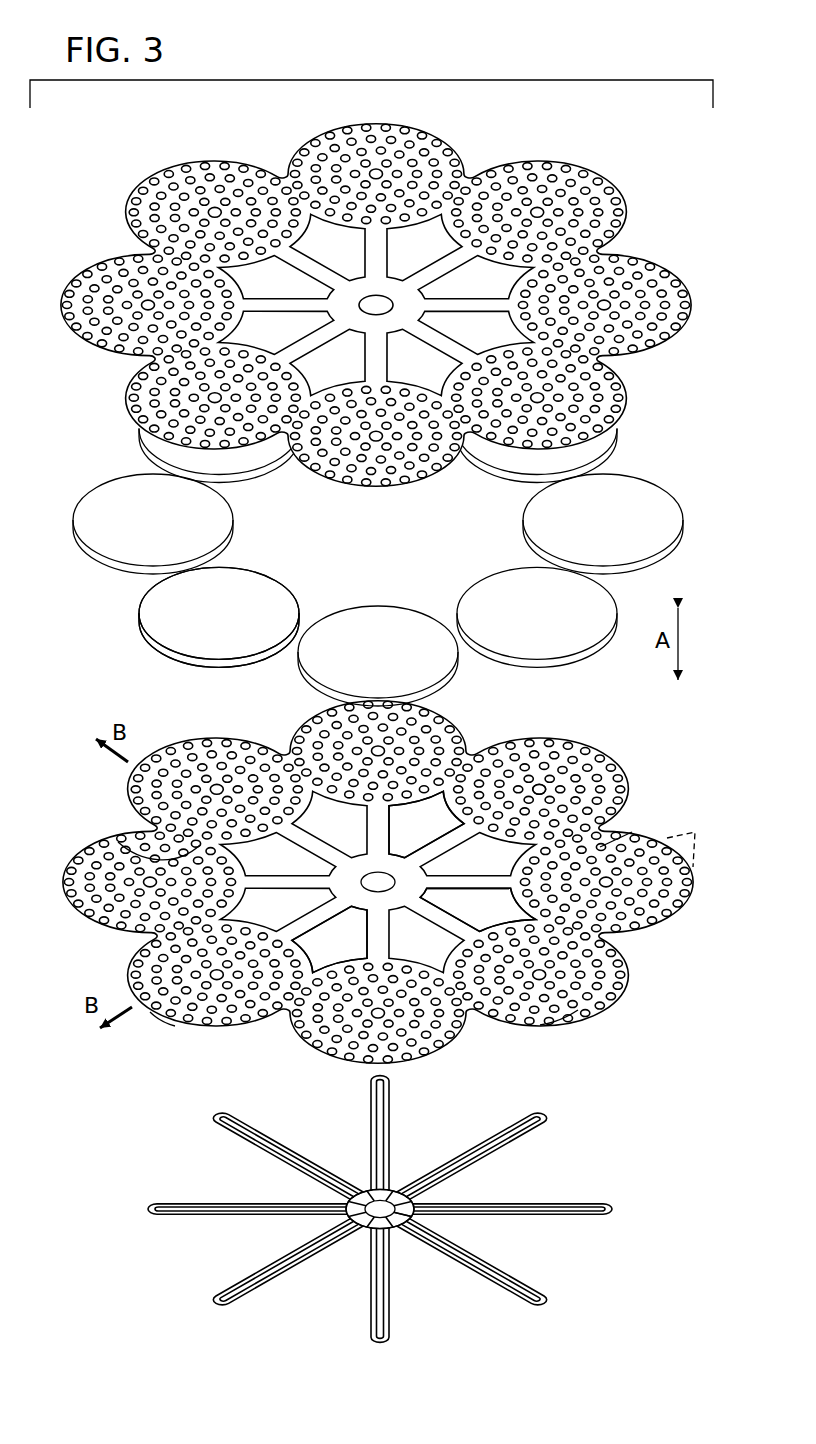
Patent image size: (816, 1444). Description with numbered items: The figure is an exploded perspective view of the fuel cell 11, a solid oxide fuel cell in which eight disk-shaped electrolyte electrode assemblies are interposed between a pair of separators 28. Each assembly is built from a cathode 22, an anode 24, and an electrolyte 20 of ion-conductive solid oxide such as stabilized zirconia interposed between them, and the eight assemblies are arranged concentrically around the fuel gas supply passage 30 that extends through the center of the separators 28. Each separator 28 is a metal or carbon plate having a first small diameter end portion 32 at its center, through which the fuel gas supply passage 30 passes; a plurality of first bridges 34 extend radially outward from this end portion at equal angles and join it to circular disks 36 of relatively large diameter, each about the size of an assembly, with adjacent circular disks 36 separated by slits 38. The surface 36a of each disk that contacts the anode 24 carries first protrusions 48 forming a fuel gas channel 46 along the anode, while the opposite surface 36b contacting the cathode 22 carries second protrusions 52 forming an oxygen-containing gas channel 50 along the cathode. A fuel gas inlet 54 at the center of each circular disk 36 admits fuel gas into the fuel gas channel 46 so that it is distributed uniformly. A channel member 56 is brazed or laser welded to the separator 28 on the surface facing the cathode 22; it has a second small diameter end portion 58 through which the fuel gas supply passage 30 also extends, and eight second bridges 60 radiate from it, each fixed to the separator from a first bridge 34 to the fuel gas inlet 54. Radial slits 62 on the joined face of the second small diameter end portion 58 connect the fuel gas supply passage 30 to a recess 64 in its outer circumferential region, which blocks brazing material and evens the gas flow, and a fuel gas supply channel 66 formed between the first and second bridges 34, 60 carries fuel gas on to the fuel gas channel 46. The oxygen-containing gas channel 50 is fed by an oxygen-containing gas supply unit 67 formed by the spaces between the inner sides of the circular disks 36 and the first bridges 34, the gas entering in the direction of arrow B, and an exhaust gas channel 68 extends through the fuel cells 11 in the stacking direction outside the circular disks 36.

The fuel cell 11 is at (578, 133).
The electrolyte 20 is at (143, 628).
The cathode 22 is at (170, 613).
The anode 24 is at (172, 634).
The separator 28 is at (647, 162).
The fuel gas supply passage 30 is at (373, 876).
The first small diameter end portion 32 is at (433, 876).
The first bridge 34 is at (396, 819).
The circular disk 36 is at (442, 715).
The surface contacting the anode 36a is at (628, 972).
The surface contacting the cathode 36b is at (524, 1018).
The slit 38 is at (120, 843).
The fuel gas channel 46 is at (633, 889).
The first protrusion 48 is at (632, 832).
The oxygen-containing gas channel 50 is at (575, 1020).
The second protrusion 52 is at (692, 837).
The fuel gas inlet 54 is at (539, 784).
The channel member 56 is at (540, 1096).
The second small diameter end portion 58 is at (398, 1172).
The second bridge 60 is at (524, 1200).
The slit 62 is at (428, 1198).
The recess 64 is at (363, 1230).
The fuel gas supply channel 66 is at (220, 1208).
The oxygen-containing gas supply unit 67 is at (322, 943).
The exhaust gas channel 68 is at (142, 1015).